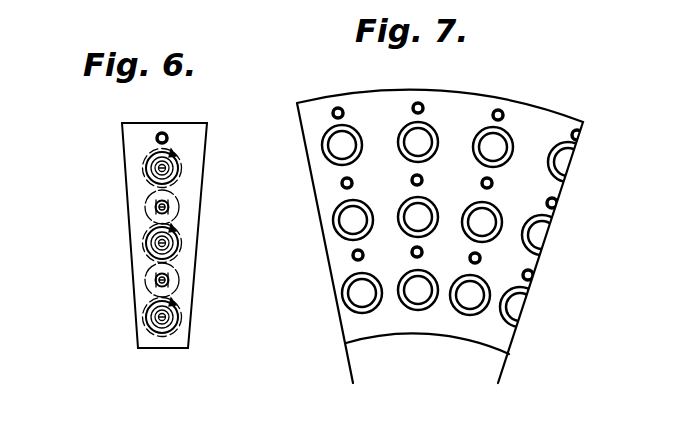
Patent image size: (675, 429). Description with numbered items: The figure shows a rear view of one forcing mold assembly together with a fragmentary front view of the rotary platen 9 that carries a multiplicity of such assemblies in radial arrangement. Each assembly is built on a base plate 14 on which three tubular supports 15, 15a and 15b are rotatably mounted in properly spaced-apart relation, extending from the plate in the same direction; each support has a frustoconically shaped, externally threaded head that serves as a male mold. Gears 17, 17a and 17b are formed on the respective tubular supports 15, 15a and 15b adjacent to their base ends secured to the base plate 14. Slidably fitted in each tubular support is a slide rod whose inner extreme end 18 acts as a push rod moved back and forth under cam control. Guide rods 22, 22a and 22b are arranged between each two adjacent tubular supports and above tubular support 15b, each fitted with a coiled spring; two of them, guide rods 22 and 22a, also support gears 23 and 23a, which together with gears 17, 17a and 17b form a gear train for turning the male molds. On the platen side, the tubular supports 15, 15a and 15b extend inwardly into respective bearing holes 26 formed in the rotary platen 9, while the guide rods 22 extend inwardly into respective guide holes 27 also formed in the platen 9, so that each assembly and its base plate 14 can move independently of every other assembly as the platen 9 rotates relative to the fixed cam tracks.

In FIG. 6, the base plate 14 is at (133, 138).
In FIG. 6, the tubular support 15 is at (150, 318).
In FIG. 6, the tubular support 15a is at (174, 243).
In FIG. 6, the tubular support 15b is at (173, 168).
In FIG. 6, the gear 17 is at (174, 316).
In FIG. 6, the gear 17a is at (174, 231).
In FIG. 6, the gear 17b is at (178, 185).
In FIG. 6, the inner extreme end of slide rod 18 is at (160, 169).
In FIG. 6, the guide rod 22 is at (166, 278).
In FIG. 6, the guide rod 22a is at (157, 209).
In FIG. 6, the guide rod 22b is at (177, 137).
In FIG. 6, the gear 23 is at (146, 278).
In FIG. 6, the gear 23a is at (144, 205).
In FIG. 7, the rotary platen 9 is at (535, 118).
In FIG. 7, the bearing hole 26 is at (408, 138).
In FIG. 7, the guide hole 27 is at (496, 114).